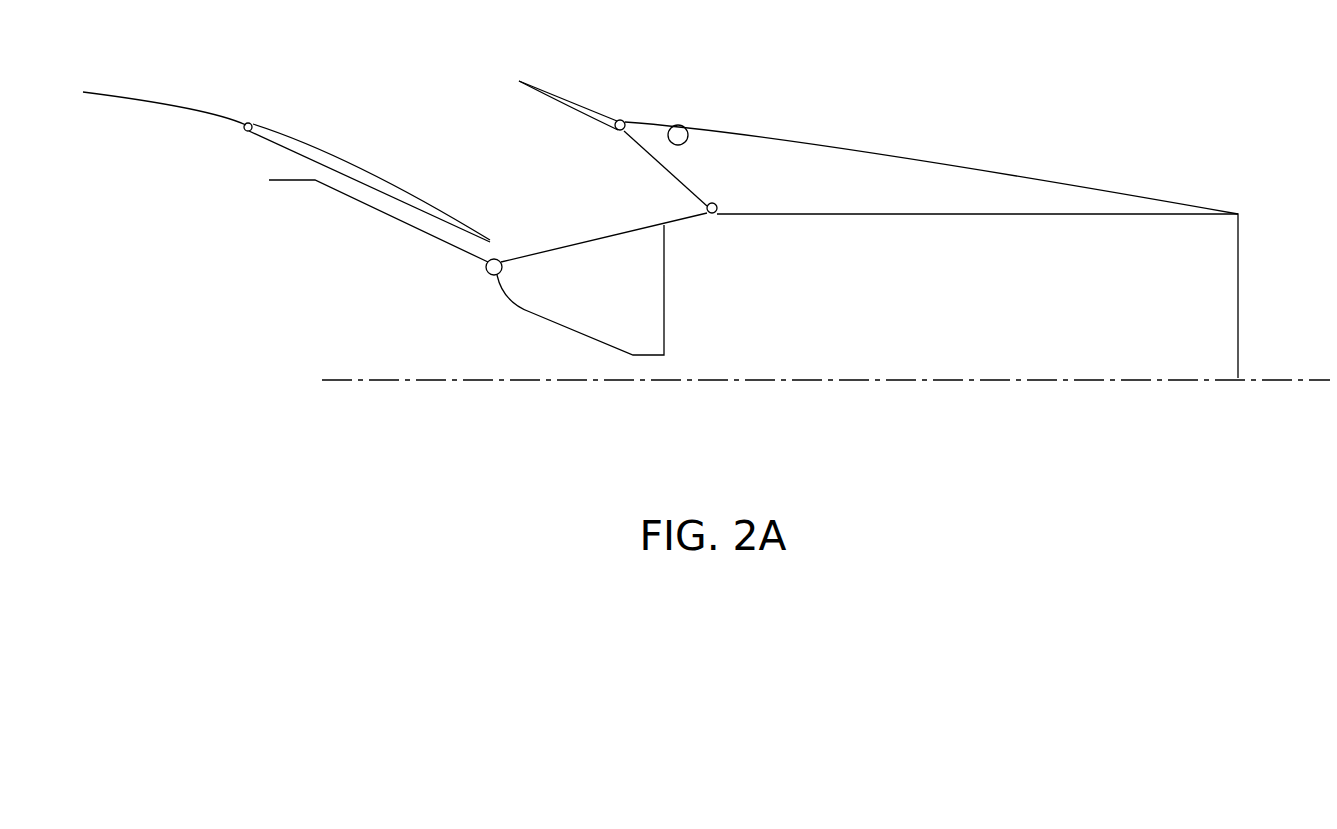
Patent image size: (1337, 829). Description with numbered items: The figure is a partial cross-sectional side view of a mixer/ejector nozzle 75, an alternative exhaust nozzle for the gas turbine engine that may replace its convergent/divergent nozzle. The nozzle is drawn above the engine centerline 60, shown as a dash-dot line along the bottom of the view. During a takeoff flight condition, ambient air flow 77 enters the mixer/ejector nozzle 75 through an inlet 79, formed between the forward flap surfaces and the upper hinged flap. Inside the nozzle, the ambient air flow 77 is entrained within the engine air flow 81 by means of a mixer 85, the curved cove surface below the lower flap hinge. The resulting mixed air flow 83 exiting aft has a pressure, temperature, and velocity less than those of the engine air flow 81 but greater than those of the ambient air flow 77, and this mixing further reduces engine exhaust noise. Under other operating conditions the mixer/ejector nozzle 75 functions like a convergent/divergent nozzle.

The centerline 60 is at (1313, 378).
The mixer/ejector nozzle 75 is at (1060, 124).
The ambient air flow 77 is at (455, 149).
The inlet 79 is at (489, 98).
The engine air flow 81 is at (366, 311).
The mixed air flow 83 is at (959, 300).
The mixer 85 is at (582, 310).